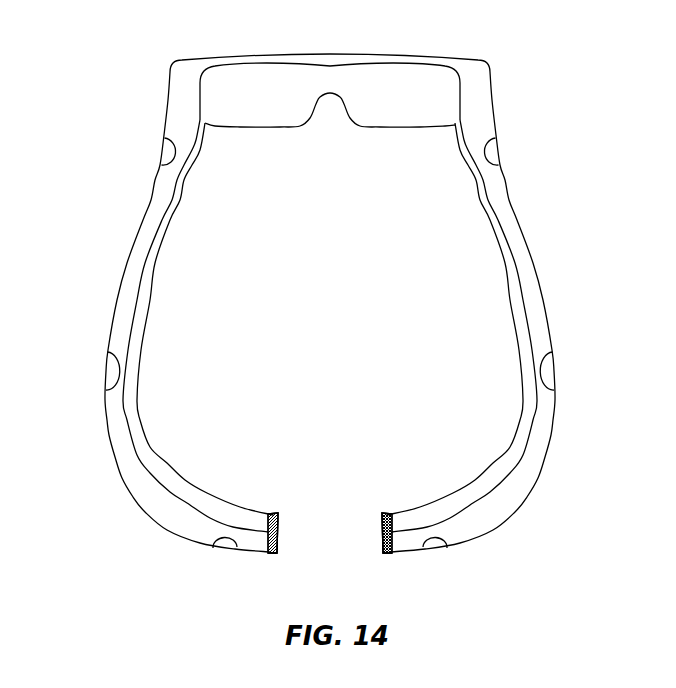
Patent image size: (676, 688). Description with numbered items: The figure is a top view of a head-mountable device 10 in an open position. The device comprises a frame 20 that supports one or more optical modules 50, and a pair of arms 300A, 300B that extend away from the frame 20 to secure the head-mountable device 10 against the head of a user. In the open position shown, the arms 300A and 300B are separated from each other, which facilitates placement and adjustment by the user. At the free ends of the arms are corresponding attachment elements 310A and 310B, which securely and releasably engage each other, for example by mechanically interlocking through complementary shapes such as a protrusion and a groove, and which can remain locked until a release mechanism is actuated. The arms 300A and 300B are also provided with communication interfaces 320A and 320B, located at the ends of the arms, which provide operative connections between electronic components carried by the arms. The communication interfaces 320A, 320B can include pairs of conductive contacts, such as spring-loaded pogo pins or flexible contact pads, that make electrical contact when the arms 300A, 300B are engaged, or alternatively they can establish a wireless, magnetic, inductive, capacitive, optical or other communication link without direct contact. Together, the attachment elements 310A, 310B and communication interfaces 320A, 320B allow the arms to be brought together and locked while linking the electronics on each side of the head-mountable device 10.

The head-mountable device 10 is at (95, 38).
The frame 20 is at (465, 73).
The optical module 50 is at (260, 90).
The first arm 300A is at (127, 488).
The second arm 300B is at (542, 488).
The attachment element 310A is at (277, 517).
The attachment element 310B is at (387, 515).
The communication interface 320A is at (277, 553).
The communication interface 320B is at (388, 553).